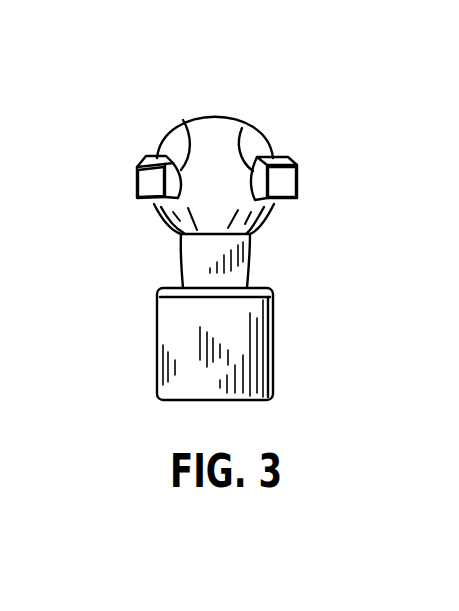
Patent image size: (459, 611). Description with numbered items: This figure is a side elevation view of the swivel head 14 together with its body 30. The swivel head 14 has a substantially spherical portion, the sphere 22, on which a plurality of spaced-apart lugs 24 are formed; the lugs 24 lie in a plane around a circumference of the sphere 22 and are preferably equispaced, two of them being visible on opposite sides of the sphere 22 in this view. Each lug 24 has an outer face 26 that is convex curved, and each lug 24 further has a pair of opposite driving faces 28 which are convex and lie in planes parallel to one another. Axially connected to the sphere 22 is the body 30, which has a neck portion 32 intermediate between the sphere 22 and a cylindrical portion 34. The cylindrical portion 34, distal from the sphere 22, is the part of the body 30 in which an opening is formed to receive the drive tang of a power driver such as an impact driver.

The swivel head 14 is at (139, 282).
The sphere 22 is at (218, 117).
The lugs 24 is at (137, 170).
The outer face 26 is at (137, 197).
The driving faces 28 is at (183, 120).
The body 30 is at (157, 316).
The neck portion 32 is at (245, 259).
The cylindrical portion 34 is at (273, 325).